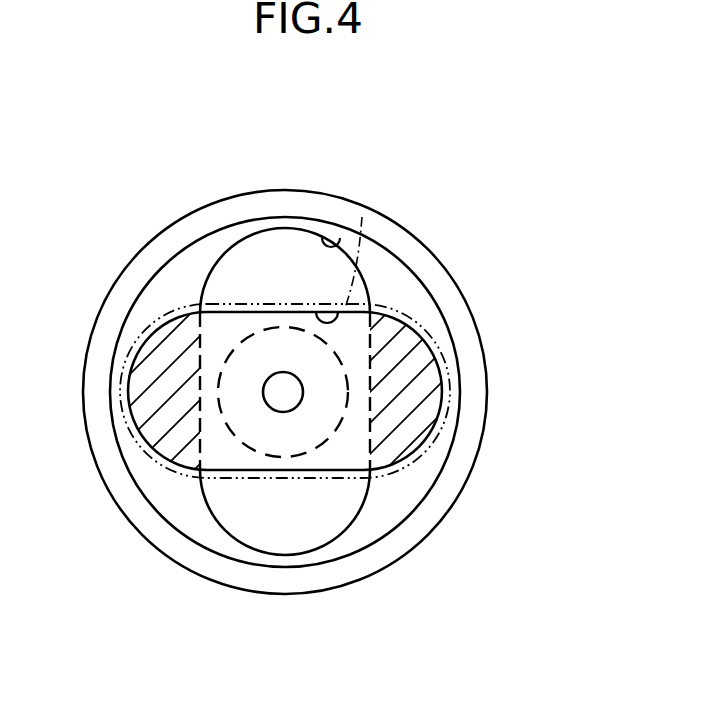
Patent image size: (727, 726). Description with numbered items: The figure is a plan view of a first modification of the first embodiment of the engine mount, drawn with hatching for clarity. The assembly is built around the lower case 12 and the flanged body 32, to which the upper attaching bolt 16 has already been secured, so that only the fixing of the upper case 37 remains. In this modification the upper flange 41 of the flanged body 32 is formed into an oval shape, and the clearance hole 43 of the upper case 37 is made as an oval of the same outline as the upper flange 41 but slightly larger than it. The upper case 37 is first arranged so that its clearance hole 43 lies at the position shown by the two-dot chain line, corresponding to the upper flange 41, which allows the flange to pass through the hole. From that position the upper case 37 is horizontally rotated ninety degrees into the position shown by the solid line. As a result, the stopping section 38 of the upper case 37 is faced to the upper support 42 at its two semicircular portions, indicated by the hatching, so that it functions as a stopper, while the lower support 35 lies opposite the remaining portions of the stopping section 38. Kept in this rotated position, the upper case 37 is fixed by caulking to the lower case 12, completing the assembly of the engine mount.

The lower case 12 is at (442, 505).
The upper attaching bolt 16 is at (295, 400).
The flanged body 32 is at (283, 326).
The lower support 35 is at (262, 243).
The upper case 37 is at (392, 243).
The stopping section 38 is at (410, 283).
The upper flange 41 is at (423, 418).
The upper support 42 is at (437, 347).
The clearance hole 43 is at (362, 217).